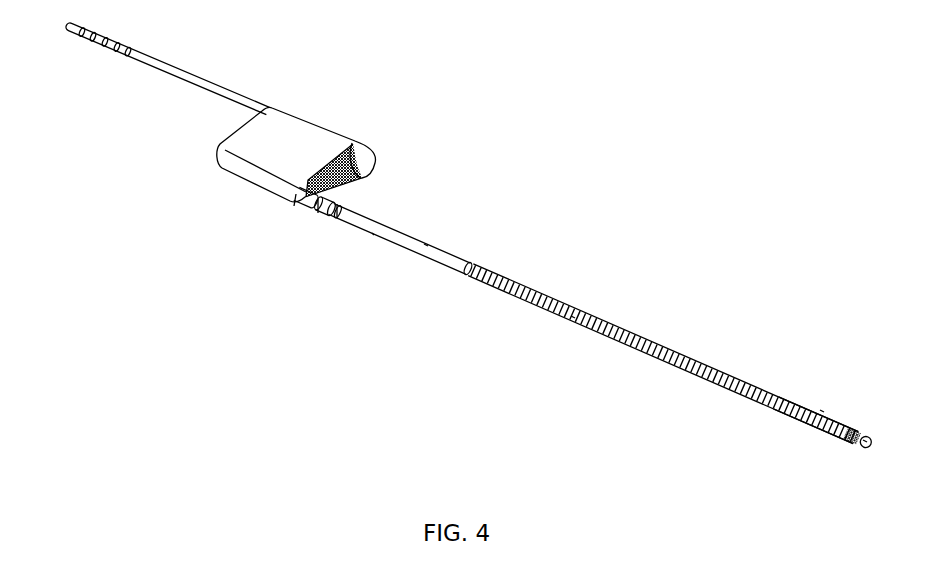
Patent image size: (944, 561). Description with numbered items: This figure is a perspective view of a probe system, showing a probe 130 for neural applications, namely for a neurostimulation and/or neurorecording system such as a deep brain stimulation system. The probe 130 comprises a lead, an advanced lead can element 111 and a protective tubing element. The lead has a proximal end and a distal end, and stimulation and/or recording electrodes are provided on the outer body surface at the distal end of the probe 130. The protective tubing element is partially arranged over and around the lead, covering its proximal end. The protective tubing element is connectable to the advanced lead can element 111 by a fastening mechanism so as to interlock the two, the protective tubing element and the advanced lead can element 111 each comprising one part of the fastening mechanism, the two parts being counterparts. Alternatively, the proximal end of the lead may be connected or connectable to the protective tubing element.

The probe 130 is at (209, 436).
The advanced lead can element 111 is at (367, 163).